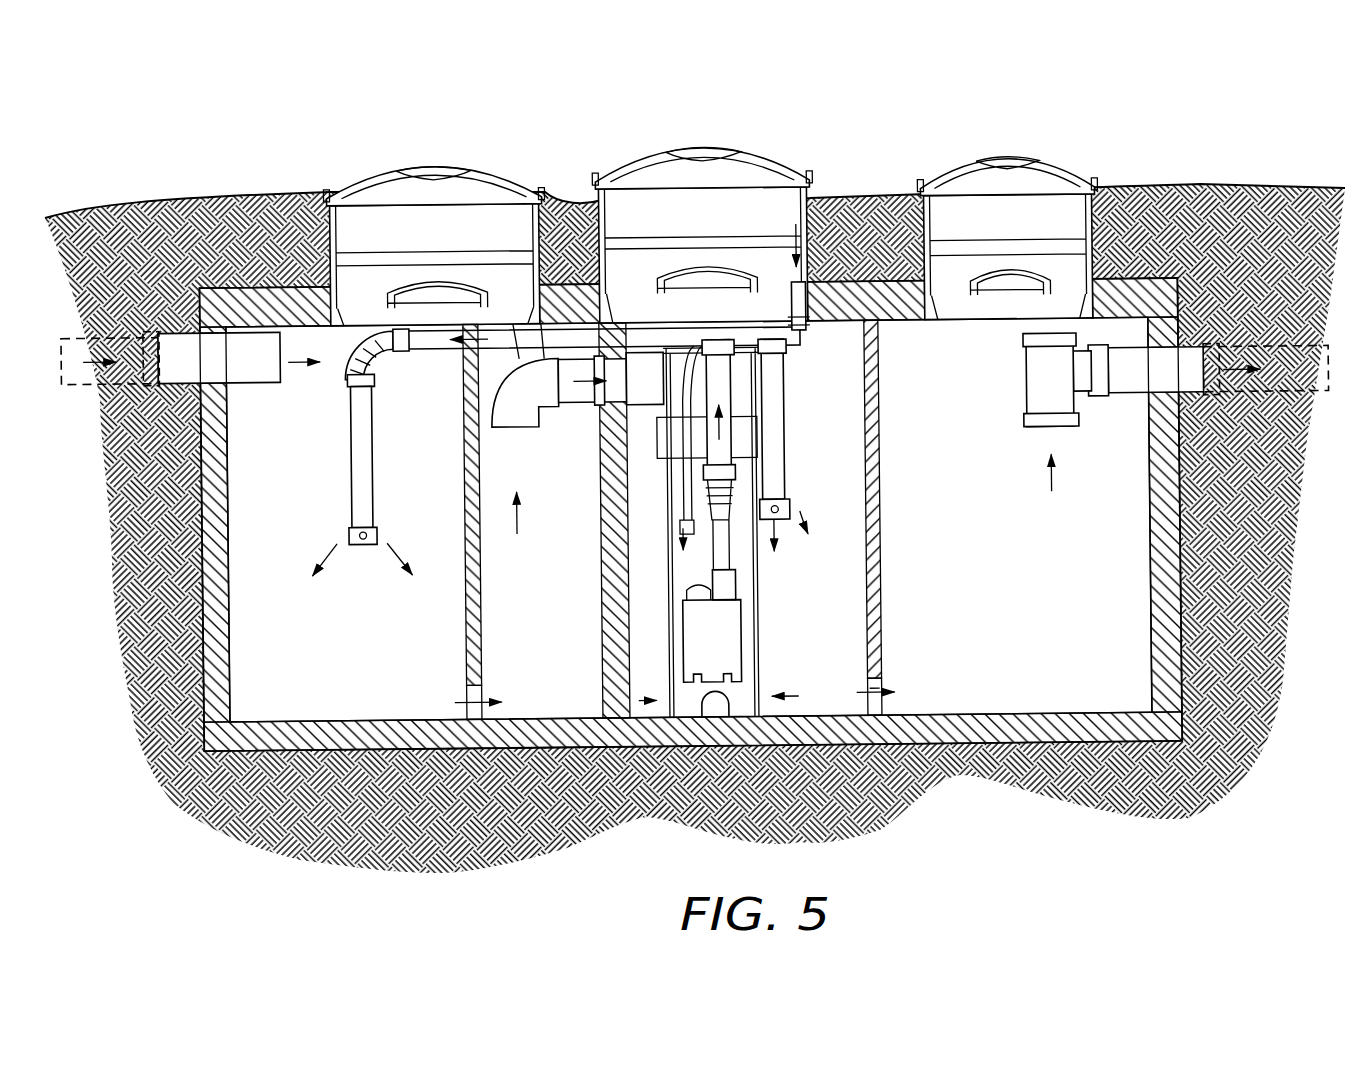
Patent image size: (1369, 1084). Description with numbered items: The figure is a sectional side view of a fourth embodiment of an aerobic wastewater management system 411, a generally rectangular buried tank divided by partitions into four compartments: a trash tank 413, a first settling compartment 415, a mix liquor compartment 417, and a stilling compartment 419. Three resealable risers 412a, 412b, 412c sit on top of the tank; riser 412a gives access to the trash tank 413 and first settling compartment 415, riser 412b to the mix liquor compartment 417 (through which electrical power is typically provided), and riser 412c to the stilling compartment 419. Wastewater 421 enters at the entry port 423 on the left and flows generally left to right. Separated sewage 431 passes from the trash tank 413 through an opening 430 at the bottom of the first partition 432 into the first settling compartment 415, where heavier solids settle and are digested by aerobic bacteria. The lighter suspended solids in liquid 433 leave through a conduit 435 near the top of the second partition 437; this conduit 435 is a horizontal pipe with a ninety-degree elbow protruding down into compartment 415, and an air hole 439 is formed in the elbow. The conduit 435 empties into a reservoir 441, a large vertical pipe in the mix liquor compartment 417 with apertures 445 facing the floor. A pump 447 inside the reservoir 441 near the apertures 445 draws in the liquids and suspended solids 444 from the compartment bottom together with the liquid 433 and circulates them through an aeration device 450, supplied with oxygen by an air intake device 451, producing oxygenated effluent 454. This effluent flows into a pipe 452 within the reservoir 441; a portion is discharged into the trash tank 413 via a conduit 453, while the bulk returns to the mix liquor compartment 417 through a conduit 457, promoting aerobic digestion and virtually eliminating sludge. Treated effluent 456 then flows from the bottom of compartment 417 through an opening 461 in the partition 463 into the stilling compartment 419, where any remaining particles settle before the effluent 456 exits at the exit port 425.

The aerobic wastewater management system 411 is at (1092, 100).
The resealable riser 412a is at (380, 178).
The resealable riser 412b is at (633, 160).
The resealable riser 412c is at (958, 165).
The trash tank 413 is at (301, 518).
The first settling compartment 415 is at (562, 606).
The mix liquor compartment 417 is at (862, 561).
The stilling compartment 419 is at (1037, 594).
The wastewater 421 is at (88, 340).
The entry port 423 is at (172, 333).
The exit port 425 is at (1208, 345).
The opening 430 is at (468, 695).
The separated sewage 431 is at (510, 678).
The first partition 432 is at (465, 488).
The lighter solids suspended in liquid 433 is at (587, 403).
The conduit 435 is at (520, 425).
The second partition 437 is at (605, 540).
The air hole 439 is at (508, 362).
The reservoir 441 is at (613, 710).
The liquids and suspended solids 444 is at (695, 640).
The apertures 445 is at (727, 702).
The pump 447 is at (758, 660).
The aeration device 450 is at (733, 537).
The air intake device 451 is at (805, 326).
The pipe 452 is at (733, 388).
The conduit 453 is at (348, 350).
The oxygenated effluent 454 is at (460, 340).
The treated effluent 456 is at (360, 553).
The conduit 457 is at (790, 458).
The opening 461 is at (882, 680).
The partition 463 is at (880, 500).